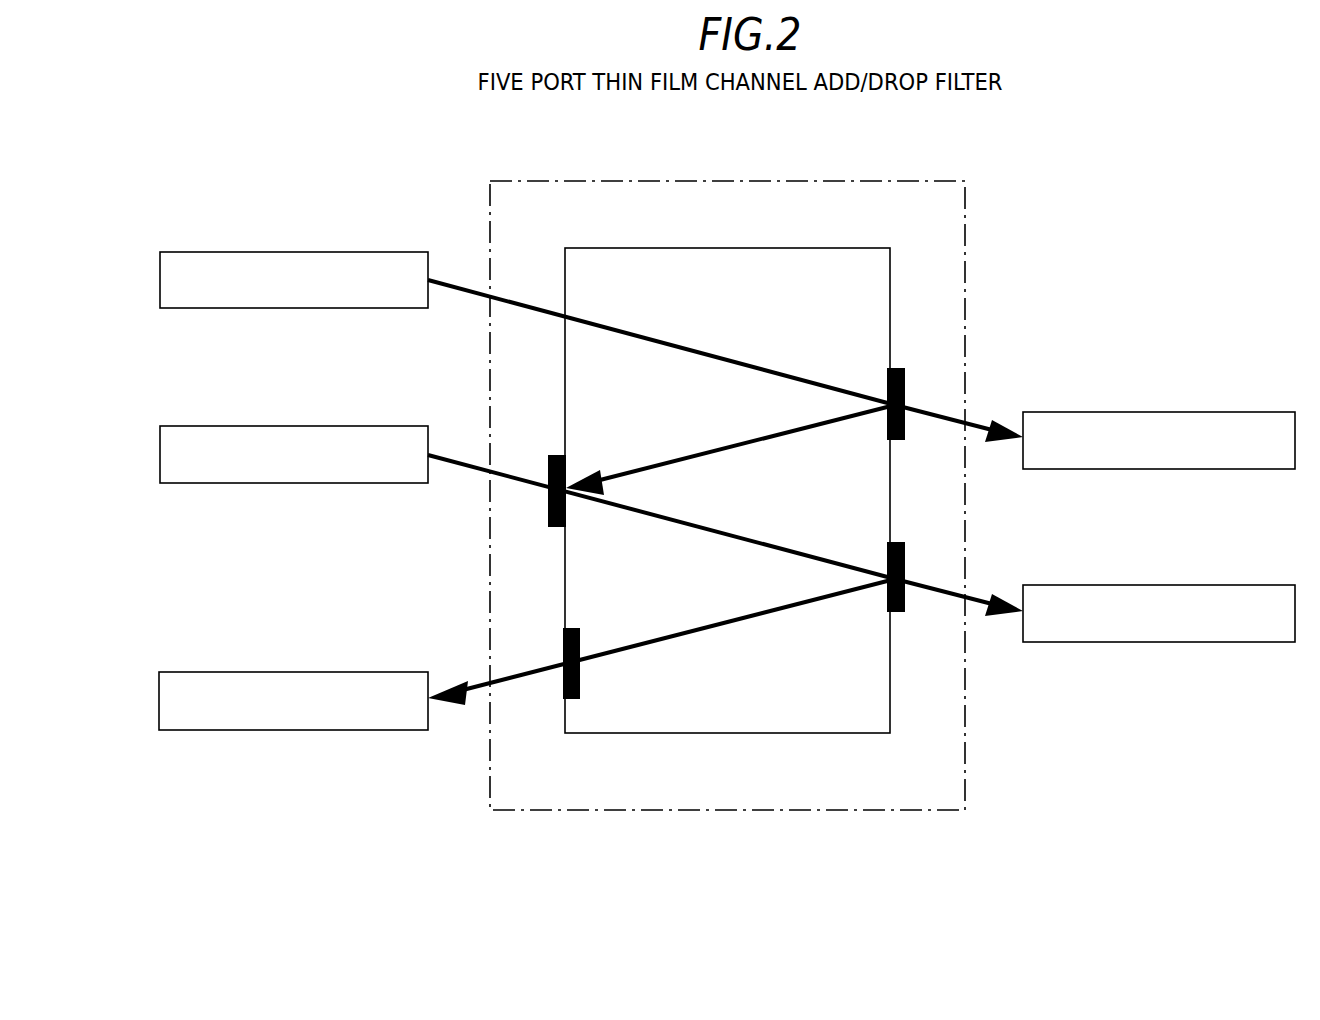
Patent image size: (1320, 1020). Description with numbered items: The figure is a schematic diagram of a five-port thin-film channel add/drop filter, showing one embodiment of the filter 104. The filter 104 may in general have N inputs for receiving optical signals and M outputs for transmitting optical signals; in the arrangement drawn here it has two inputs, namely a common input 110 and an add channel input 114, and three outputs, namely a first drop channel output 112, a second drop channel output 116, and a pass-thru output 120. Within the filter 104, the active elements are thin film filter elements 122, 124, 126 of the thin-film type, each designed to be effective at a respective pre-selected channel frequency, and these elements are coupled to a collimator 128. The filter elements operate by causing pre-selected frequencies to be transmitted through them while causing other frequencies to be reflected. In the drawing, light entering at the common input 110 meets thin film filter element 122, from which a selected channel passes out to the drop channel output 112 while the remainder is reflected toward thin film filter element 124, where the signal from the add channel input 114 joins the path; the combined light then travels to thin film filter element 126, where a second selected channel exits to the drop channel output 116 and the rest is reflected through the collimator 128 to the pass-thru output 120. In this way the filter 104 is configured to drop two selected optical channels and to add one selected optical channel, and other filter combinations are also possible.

The filter 104 is at (748, 181).
The input 110 is at (454, 282).
The output 112 is at (927, 412).
The input 114 is at (456, 457).
The output 116 is at (930, 587).
The output 120 is at (514, 665).
The thin film filter element 122 is at (905, 368).
The thin film filter element 124 is at (570, 460).
The thin film filter element 126 is at (903, 542).
The collimator 128 is at (580, 699).